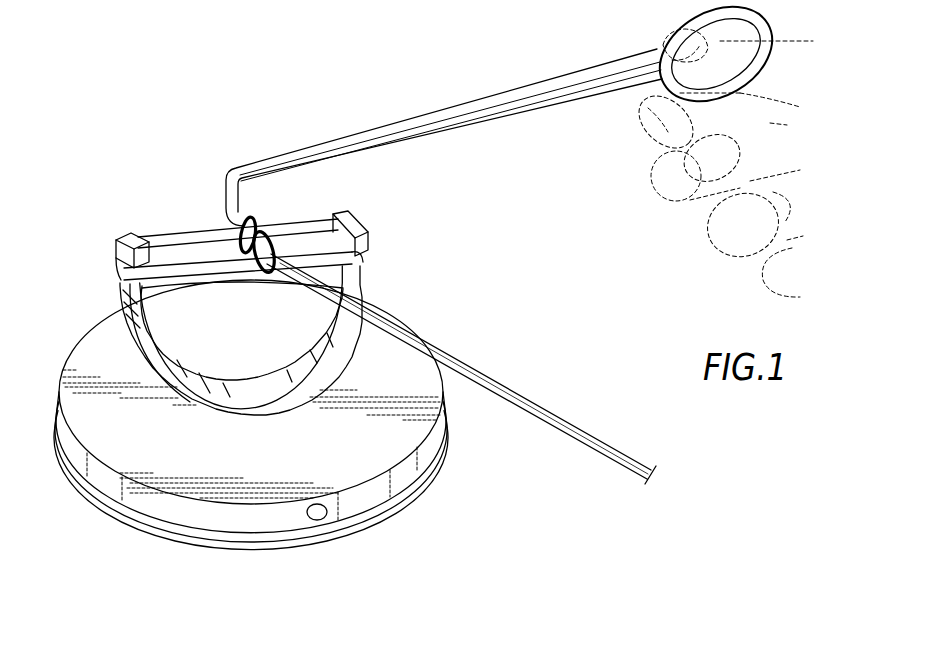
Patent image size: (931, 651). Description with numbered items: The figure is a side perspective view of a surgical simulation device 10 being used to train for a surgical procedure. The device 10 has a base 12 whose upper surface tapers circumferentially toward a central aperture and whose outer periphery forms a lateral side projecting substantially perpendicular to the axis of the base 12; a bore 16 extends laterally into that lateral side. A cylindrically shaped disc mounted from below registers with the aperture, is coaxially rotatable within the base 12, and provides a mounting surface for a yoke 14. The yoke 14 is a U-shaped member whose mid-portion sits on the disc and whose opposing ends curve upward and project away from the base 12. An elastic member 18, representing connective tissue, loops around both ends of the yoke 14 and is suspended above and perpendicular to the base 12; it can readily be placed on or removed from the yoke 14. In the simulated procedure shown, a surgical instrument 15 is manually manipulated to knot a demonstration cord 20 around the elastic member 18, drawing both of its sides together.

The surgical simulation device 10 is at (120, 182).
The base 12 is at (157, 468).
The yoke 14 is at (128, 313).
The surgical instrument 15 is at (519, 87).
The bore 16 is at (320, 520).
The elastic member 18 is at (213, 228).
The demonstration cord 20 is at (570, 423).